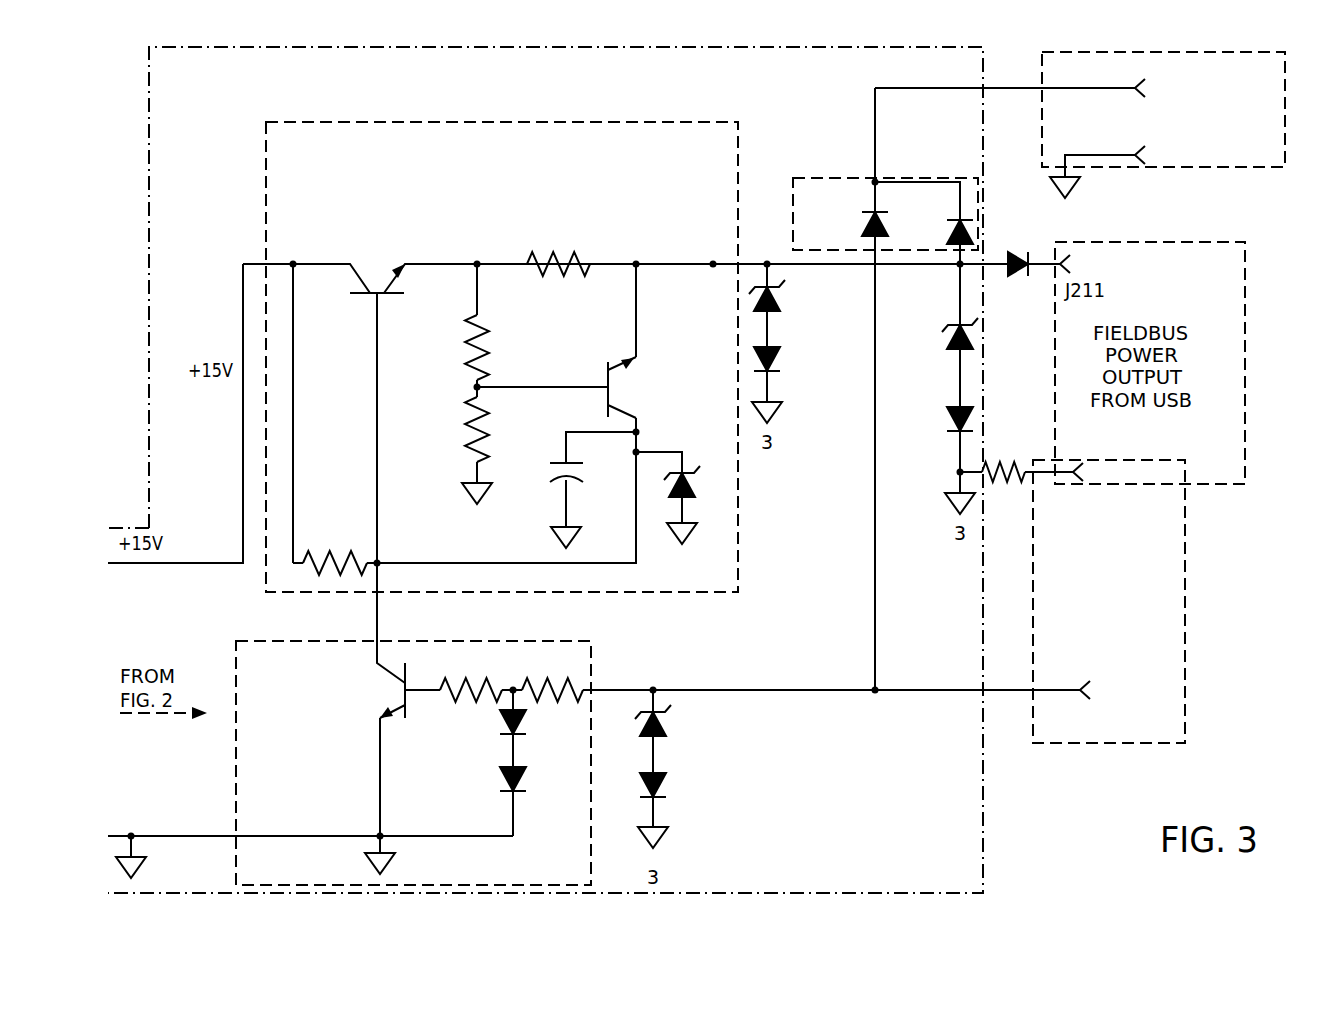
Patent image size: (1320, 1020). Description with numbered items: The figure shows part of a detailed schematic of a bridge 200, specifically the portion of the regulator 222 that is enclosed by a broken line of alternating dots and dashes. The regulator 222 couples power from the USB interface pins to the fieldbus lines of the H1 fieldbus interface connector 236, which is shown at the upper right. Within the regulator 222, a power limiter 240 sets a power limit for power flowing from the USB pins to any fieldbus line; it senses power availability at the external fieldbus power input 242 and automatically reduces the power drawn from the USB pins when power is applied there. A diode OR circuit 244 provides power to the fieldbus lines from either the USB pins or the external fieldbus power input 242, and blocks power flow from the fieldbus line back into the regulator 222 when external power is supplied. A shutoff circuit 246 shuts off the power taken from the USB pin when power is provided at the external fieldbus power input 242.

The bridge 200 is at (1113, 857).
The regulator 222 is at (983, 830).
The H1 fieldbus interface connector 236 is at (1133, 168).
The power limiter 240 is at (693, 122).
The external fieldbus power input 242 is at (1185, 563).
The diode OR circuit 244 is at (842, 178).
The shutoff circuit 246 is at (591, 657).